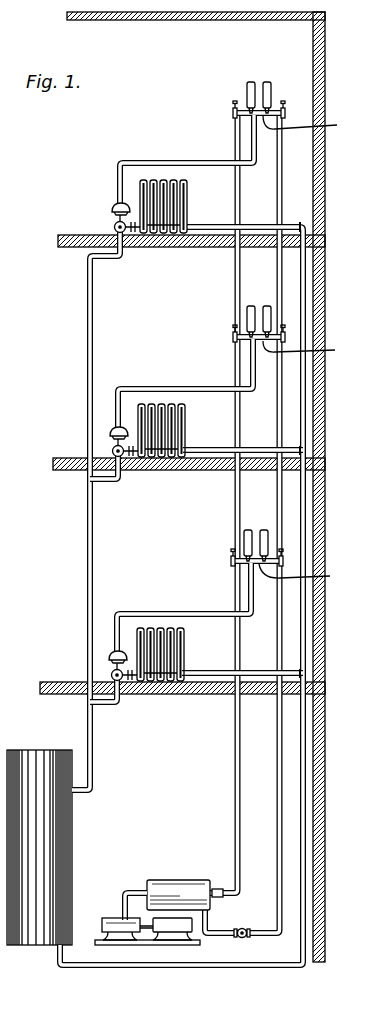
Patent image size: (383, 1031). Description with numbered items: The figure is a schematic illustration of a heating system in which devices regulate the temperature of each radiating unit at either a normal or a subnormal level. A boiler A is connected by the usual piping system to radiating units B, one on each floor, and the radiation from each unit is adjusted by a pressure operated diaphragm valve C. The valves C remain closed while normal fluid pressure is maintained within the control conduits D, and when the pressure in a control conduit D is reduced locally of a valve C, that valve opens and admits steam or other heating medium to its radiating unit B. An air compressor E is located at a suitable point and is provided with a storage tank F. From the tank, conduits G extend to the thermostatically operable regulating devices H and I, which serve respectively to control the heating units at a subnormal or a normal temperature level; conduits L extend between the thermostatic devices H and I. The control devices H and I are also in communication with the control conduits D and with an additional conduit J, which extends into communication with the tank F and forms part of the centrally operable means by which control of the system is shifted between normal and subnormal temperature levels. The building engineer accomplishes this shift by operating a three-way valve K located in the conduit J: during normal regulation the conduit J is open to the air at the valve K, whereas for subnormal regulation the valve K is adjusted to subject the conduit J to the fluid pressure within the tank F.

The boiler A is at (60, 827).
The radiating units B is at (188, 198).
The pressure operated diaphragm valves C is at (113, 201).
The control conduits D is at (177, 160).
The air compressor E is at (110, 917).
The storage tank F is at (182, 882).
The conduits G is at (235, 135).
The thermostatically operable regulating device H is at (252, 76).
The thermostatically operable regulating device I is at (266, 81).
The conduit J is at (277, 733).
The three-way valve K is at (238, 930).
The conduits L is at (304, 351).